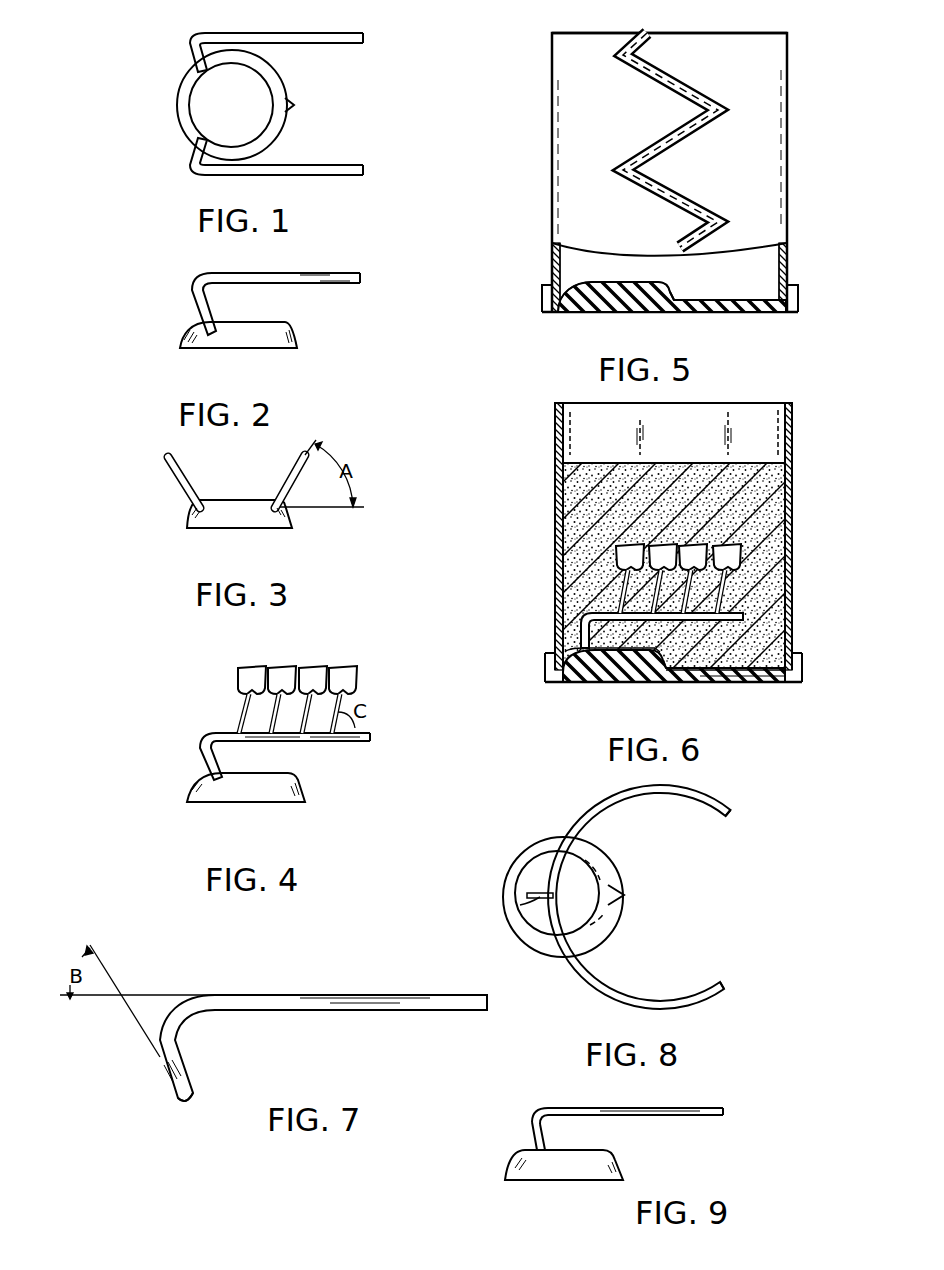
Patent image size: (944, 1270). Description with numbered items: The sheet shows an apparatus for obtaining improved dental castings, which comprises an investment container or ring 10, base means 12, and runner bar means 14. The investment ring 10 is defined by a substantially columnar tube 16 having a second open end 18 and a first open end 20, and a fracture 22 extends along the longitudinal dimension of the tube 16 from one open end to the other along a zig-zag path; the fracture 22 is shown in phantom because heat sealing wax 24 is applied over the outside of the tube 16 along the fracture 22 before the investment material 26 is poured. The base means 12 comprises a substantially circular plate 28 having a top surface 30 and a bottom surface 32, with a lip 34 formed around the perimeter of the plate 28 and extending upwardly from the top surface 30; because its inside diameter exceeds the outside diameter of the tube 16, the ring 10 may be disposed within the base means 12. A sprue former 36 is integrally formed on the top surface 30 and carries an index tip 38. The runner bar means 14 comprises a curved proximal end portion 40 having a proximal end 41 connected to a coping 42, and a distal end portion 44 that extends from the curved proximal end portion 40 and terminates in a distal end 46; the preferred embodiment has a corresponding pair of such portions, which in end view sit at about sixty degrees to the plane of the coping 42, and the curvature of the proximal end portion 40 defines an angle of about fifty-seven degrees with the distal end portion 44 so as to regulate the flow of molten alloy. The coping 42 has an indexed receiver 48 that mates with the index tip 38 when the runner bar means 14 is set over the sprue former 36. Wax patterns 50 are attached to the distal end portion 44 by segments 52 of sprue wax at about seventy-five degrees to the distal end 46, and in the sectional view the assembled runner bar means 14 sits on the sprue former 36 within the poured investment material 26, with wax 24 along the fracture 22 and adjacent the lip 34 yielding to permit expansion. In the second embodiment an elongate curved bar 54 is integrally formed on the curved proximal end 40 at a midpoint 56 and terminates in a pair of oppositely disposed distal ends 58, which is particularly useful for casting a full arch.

In FIG. 5, the investment ring 10 is at (666, 171).
In FIG. 6, the investment ring 10 is at (659, 548).
In FIG. 5, the base means 12 is at (666, 299).
In FIG. 6, the base means 12 is at (670, 670).
In FIG. 1, the runner bar means 14 is at (257, 97).
In FIG. 2, the runner bar means 14 is at (260, 314).
In FIG. 3, the runner bar means 14 is at (226, 507).
In FIG. 4, the runner bar means 14 is at (283, 731).
In FIG. 6, the runner bar means 14 is at (664, 611).
In FIG. 7, the runner bar means 14 is at (325, 1036).
In FIG. 8, the runner bar means 14 is at (612, 895).
In FIG. 9, the runner bar means 14 is at (620, 1142).
In FIG. 5, the columnar tube 16 is at (552, 92).
In FIG. 6, the columnar tube 16 is at (555, 507).
In FIG. 5, the second open end 18 is at (594, 33).
In FIG. 6, the second open end 18 is at (568, 403).
In FIG. 5, the first open end 20 is at (765, 313).
In FIG. 5, the fracture 22 is at (676, 117).
In FIG. 5, the wax 24 is at (690, 153).
In FIG. 6, the wax 24 is at (553, 653).
In FIG. 6, the investment material 26 is at (692, 478).
In FIG. 5, the circular plate 28 is at (690, 313).
In FIG. 6, the circular plate 28 is at (737, 682).
In FIG. 5, the top surface 30 is at (712, 305).
In FIG. 6, the top surface 30 is at (772, 682).
In FIG. 5, the bottom surface 32 is at (735, 313).
In FIG. 6, the bottom surface 32 is at (797, 682).
In FIG. 5, the lip 34 is at (541, 297).
In FIG. 6, the lip 34 is at (545, 670).
In FIG. 5, the sprue former 36 is at (622, 282).
In FIG. 6, the sprue former 36 is at (612, 682).
In FIG. 5, the index tip 38 is at (672, 292).
In FIG. 6, the index tip 38 is at (652, 670).
In FIG. 1, the curved proximal end portion 40 is at (188, 50).
In FIG. 2, the curved proximal end portion 40 is at (190, 312).
In FIG. 3, the curved proximal end portion 40 is at (183, 473).
In FIG. 4, the curved proximal end portion 40 is at (200, 750).
In FIG. 6, the curved proximal end portion 40 is at (580, 630).
In FIG. 7, the curved proximal end portion 40 is at (165, 1073).
In FIG. 8, the curved proximal end portion 40 is at (520, 905).
In FIG. 9, the curved proximal end portion 40 is at (530, 1128).
In FIG. 2, the proximal end 41 is at (190, 350).
In FIG. 3, the proximal end 41 is at (185, 510).
In FIG. 4, the proximal end 41 is at (195, 804).
In FIG. 7, the proximal end 41 is at (196, 1097).
In FIG. 9, the proximal end 41 is at (547, 1150).
In FIG. 1, the coping 42 is at (231, 105).
In FIG. 2, the coping 42 is at (265, 345).
In FIG. 3, the coping 42 is at (262, 523).
In FIG. 4, the coping 42 is at (248, 800).
In FIG. 6, the coping 42 is at (596, 648).
In FIG. 8, the coping 42 is at (530, 870).
In FIG. 9, the coping 42 is at (530, 1178).
In FIG. 1, the distal end portion 44 is at (295, 33).
In FIG. 2, the distal end portion 44 is at (281, 273).
In FIG. 4, the distal end portion 44 is at (248, 741).
In FIG. 6, the distal end portion 44 is at (681, 620).
In FIG. 7, the distal end portion 44 is at (327, 995).
In FIG. 1, the distal end 46 is at (363, 35).
In FIG. 2, the distal end 46 is at (360, 278).
In FIG. 4, the distal end 46 is at (370, 737).
In FIG. 6, the distal end 46 is at (745, 616).
In FIG. 7, the distal end 46 is at (487, 1003).
In FIG. 1, the indexed receiver 48 is at (297, 105).
In FIG. 2, the indexed receiver 48 is at (293, 338).
In FIG. 4, the indexed receiver 48 is at (306, 793).
In FIG. 6, the indexed receiver 48 is at (680, 668).
In FIG. 8, the indexed receiver 48 is at (583, 897).
In FIG. 9, the indexed receiver 48 is at (620, 1172).
In FIG. 4, the wax patterns 50 is at (252, 666).
In FIG. 6, the wax patterns 50 is at (663, 544).
In FIG. 4, the sprue wax segments 52 is at (236, 712).
In FIG. 6, the sprue wax segments 52 is at (614, 585).
In FIG. 8, the elongate curved bar 54 is at (662, 790).
In FIG. 9, the elongate curved bar 54 is at (663, 1108).
In FIG. 8, the midpoint 56 is at (556, 905).
In FIG. 9, the midpoint 56 is at (538, 1108).
In FIG. 8, the distal ends 58 is at (728, 813).
In FIG. 9, the distal ends 58 is at (723, 1111).